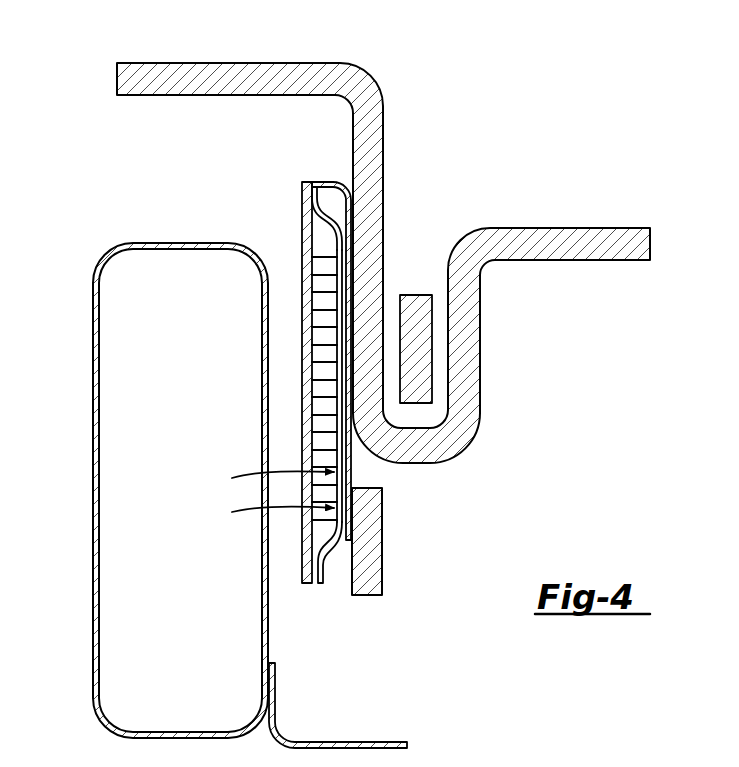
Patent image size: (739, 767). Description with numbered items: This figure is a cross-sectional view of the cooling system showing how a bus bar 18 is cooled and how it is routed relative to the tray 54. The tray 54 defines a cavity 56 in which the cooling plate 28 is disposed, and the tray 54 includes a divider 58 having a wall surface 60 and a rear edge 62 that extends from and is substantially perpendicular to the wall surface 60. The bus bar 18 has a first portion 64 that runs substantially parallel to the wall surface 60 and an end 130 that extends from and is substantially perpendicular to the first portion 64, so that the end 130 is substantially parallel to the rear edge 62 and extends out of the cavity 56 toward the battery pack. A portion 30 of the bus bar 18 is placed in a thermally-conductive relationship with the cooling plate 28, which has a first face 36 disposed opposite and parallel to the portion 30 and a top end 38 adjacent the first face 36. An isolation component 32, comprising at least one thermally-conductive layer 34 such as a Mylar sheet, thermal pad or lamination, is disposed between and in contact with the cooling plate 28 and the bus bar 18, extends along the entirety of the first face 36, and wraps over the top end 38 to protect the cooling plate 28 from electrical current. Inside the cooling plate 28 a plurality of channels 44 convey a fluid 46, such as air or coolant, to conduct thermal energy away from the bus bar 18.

The end 130 is at (383, 302).
The first portion 64 is at (383, 329).
The portion 30 is at (373, 290).
The bus bar 18 is at (470, 331).
The rear edge 62 is at (160, 243).
The divider 58 is at (149, 456).
The cooling plate 28 is at (302, 234).
The isolation component 32 is at (380, 359).
The thermally-conductive layer 34 is at (356, 238).
The top end 38 is at (305, 176).
The first face 36 is at (313, 386).
The fluid 46 is at (325, 300).
The channel 44 is at (269, 496).
The wall surface 60 is at (280, 552).
The tray 54 is at (340, 740).
The cavity 56 is at (342, 695).